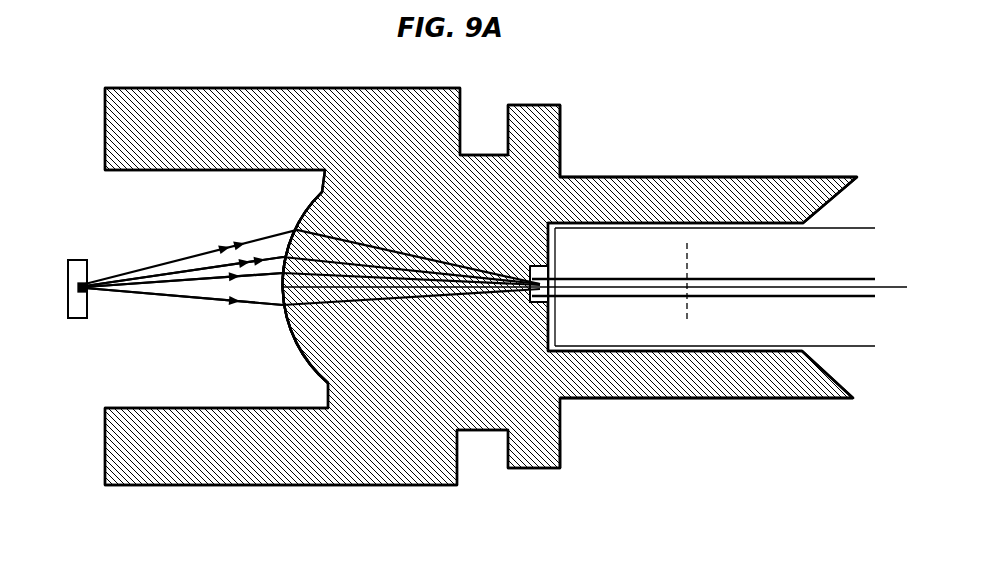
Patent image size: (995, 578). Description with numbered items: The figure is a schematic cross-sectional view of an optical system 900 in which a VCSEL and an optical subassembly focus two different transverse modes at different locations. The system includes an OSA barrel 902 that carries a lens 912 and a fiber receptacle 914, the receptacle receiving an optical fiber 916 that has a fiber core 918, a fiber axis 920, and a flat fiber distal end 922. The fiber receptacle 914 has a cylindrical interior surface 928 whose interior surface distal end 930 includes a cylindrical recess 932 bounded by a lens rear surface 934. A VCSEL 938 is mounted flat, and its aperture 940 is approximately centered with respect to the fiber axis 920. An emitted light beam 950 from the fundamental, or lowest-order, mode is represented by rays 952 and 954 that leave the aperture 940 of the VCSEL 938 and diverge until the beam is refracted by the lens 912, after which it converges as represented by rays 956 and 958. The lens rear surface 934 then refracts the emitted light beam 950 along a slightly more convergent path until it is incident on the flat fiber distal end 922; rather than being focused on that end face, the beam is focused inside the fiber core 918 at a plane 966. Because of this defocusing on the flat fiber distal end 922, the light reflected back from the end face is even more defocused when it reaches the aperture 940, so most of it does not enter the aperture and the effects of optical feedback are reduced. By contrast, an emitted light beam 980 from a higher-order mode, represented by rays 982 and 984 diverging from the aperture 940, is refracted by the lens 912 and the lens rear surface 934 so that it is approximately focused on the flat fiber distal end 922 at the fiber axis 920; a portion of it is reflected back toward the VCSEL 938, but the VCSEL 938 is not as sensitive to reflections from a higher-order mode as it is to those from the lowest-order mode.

The optical system 900 is at (667, 94).
The OSA barrel 902 is at (385, 476).
The lens 912 is at (300, 208).
The fiber receptacle 914 is at (655, 392).
The optical fiber 916 is at (858, 348).
The fiber core 918 is at (812, 276).
The fiber axis 920 is at (787, 276).
The flat fiber distal end 922 is at (560, 177).
The cylindrical interior surface 928 is at (696, 344).
The interior surface distal end 930 is at (552, 470).
The cylindrical recess 932 is at (540, 338).
The lens rear surface 934 is at (530, 307).
The VCSEL 938 is at (68, 262).
The aperture 940 is at (90, 297).
The emitted light beam 950 is at (210, 302).
The ray 952 is at (137, 265).
The ray 954 is at (157, 298).
The ray 956 is at (267, 308).
The ray 958 is at (291, 338).
The plane 966 is at (687, 270).
The emitted light beam 980 is at (160, 257).
The ray 982 is at (173, 262).
The ray 984 is at (213, 265).